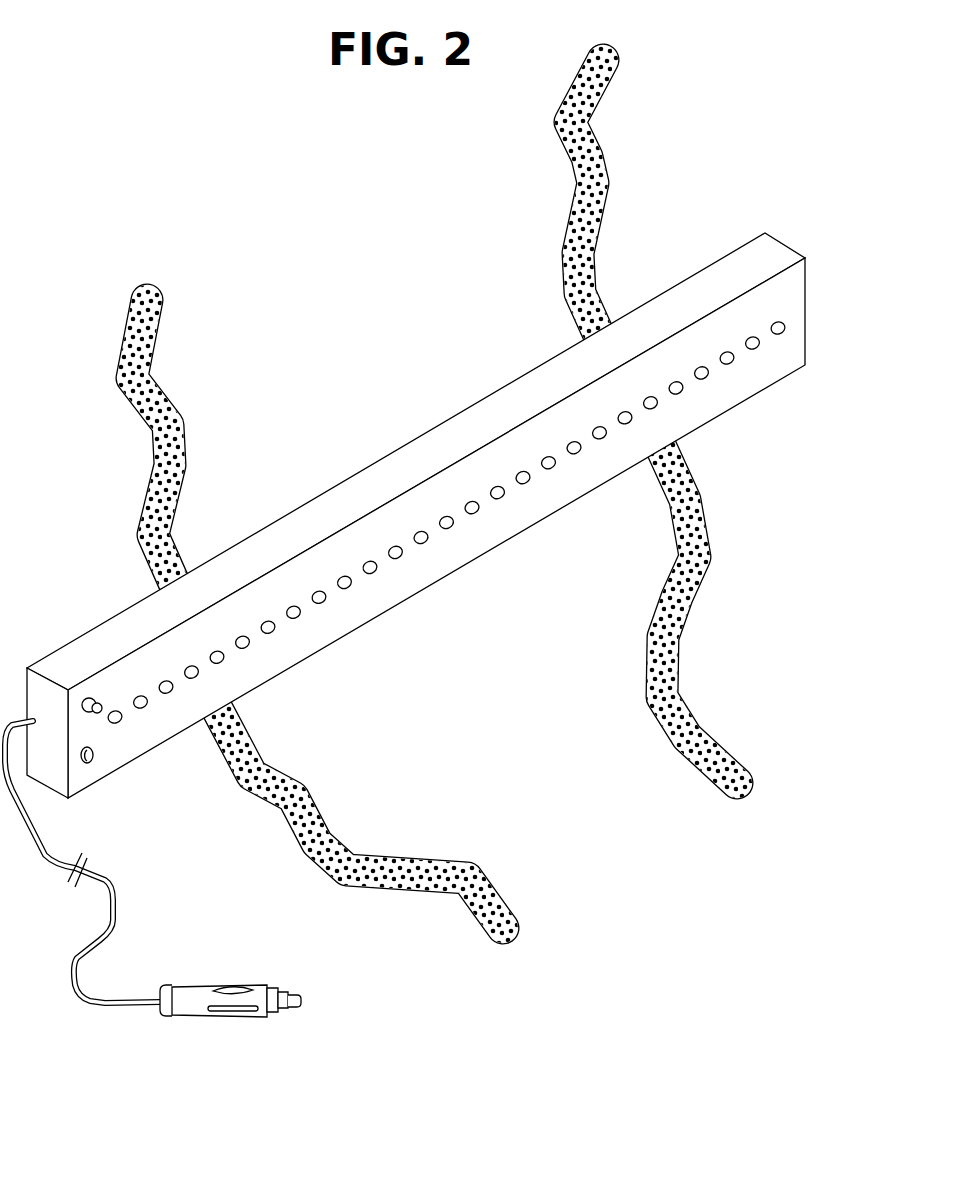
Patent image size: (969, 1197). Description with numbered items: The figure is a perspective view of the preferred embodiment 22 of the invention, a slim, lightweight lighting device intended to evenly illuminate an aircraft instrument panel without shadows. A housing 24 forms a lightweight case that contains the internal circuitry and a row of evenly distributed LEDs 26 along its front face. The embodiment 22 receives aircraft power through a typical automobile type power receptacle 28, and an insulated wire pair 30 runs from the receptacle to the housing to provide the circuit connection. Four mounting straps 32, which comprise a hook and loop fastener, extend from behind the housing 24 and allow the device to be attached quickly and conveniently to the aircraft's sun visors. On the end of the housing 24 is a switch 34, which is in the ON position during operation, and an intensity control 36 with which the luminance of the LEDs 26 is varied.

The preferred embodiment 22 is at (382, 300).
The housing 24 is at (533, 368).
The LEDs 26 is at (808, 312).
The power receptacle 28 is at (190, 1016).
The insulated wire pair 30 is at (92, 996).
The mounting straps 32 is at (180, 408).
The switch 34 is at (92, 758).
The intensity control 36 is at (93, 698).